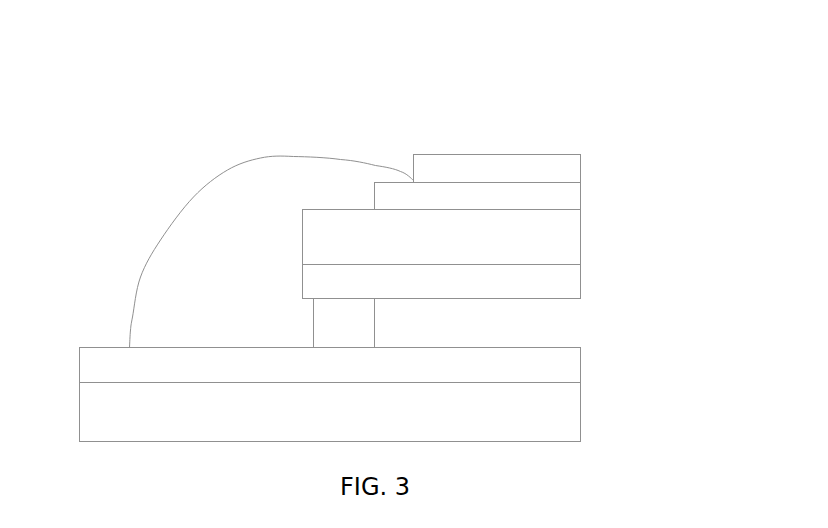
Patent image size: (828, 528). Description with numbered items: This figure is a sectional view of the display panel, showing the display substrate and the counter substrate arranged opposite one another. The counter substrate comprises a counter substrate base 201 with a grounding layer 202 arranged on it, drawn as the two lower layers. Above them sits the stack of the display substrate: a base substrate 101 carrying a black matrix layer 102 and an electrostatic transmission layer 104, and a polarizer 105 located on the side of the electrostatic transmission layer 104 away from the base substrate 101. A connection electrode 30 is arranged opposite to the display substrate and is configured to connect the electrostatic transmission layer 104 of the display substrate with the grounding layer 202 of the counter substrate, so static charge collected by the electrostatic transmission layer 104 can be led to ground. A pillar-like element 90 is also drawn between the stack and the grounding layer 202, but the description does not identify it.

The connection electrode 30 is at (217, 206).
The conductive connection pillar 90 is at (338, 322).
The base substrate 101 is at (552, 250).
The black matrix layer 102 is at (567, 290).
The electrostatic transmission layer 104 is at (562, 199).
The polarizer 105 is at (562, 167).
The counter substrate base 201 is at (551, 417).
The grounding layer 202 is at (561, 362).